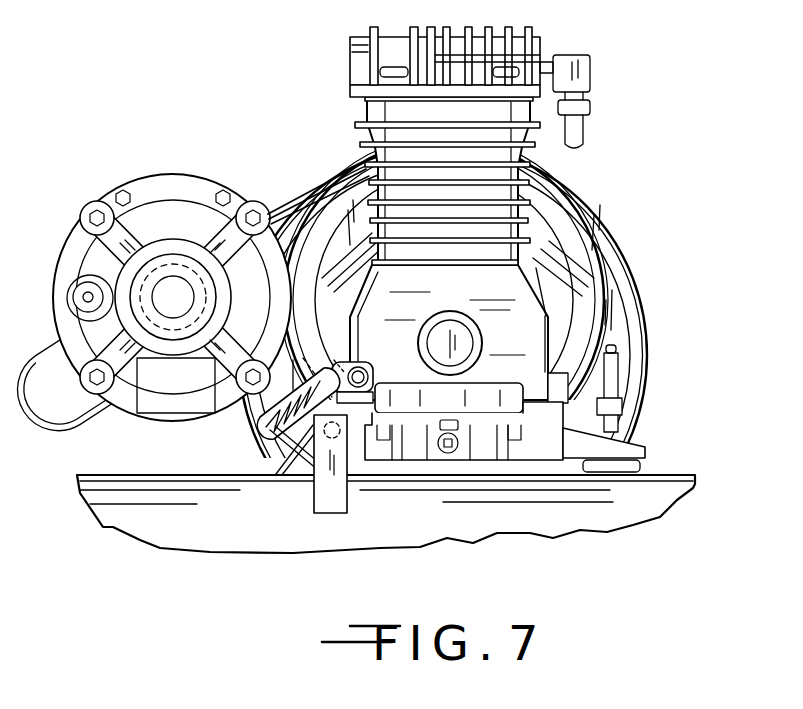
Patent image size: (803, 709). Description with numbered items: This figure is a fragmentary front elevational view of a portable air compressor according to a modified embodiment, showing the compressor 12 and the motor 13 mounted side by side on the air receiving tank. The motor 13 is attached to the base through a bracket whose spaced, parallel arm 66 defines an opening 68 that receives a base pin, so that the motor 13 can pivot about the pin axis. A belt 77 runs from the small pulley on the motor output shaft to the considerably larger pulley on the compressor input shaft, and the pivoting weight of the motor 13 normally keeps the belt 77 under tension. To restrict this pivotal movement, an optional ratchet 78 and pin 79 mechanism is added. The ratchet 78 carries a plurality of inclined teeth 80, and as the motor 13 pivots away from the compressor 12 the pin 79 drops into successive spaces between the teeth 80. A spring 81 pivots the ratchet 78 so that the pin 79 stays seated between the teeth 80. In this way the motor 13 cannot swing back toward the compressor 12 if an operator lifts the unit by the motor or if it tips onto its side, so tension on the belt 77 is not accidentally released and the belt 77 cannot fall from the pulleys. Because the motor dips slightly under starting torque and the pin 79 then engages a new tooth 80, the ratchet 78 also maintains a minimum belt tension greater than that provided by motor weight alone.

The compressor 12 is at (350, 58).
The motor 13 is at (163, 174).
The arm 66 is at (278, 476).
The opening 68 is at (338, 436).
The belt 77 is at (276, 216).
The ratchet 78 is at (293, 372).
The pin 79 is at (260, 425).
The inclined teeth 80 is at (285, 447).
The spring 81 is at (345, 363).